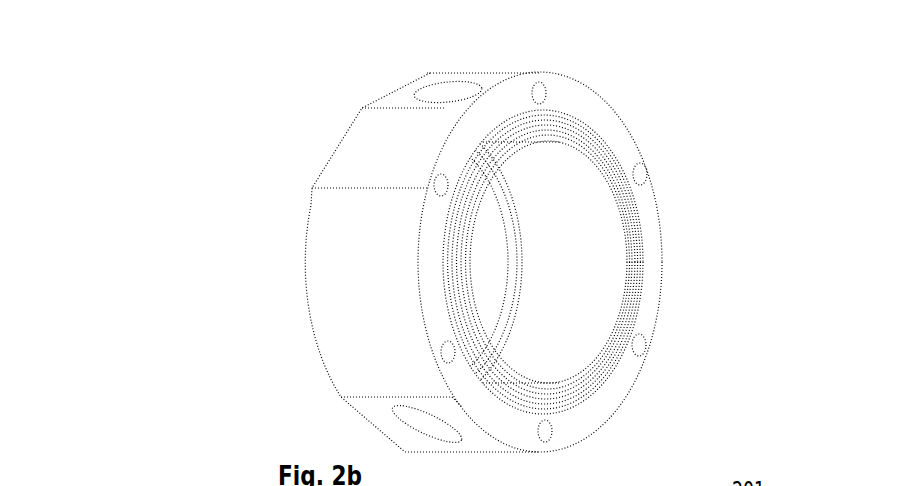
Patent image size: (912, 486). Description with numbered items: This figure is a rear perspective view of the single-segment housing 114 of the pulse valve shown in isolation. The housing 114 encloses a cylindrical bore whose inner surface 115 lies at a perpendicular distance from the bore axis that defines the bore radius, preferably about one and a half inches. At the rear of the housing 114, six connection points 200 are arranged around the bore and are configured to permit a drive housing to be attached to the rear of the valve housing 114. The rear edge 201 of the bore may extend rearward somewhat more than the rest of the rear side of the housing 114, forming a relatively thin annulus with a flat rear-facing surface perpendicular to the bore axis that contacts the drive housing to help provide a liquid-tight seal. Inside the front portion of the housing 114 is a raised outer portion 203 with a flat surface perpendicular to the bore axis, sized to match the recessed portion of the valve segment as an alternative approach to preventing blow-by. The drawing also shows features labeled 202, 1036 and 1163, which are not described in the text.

The single-segment housing 114 is at (199, 195).
The inner surface 115 is at (587, 288).
The connection points 200 is at (545, 96).
The rear edge of the bore 201 is at (637, 242).
The front flange 202 is at (655, 307).
The raised outer portion 203 is at (512, 317).
The top slot 1036 is at (471, 80).
The bottom slot 1163 is at (427, 425).